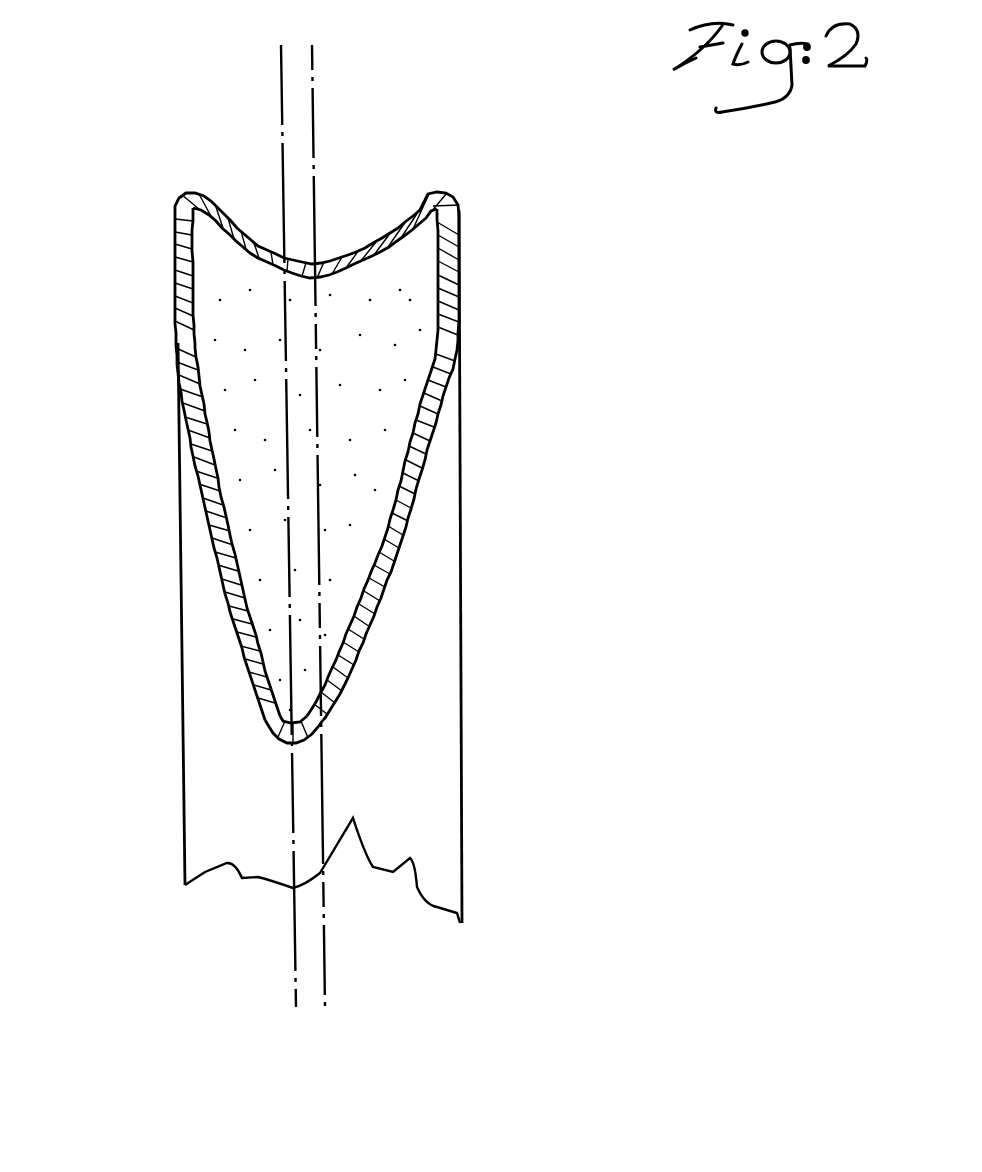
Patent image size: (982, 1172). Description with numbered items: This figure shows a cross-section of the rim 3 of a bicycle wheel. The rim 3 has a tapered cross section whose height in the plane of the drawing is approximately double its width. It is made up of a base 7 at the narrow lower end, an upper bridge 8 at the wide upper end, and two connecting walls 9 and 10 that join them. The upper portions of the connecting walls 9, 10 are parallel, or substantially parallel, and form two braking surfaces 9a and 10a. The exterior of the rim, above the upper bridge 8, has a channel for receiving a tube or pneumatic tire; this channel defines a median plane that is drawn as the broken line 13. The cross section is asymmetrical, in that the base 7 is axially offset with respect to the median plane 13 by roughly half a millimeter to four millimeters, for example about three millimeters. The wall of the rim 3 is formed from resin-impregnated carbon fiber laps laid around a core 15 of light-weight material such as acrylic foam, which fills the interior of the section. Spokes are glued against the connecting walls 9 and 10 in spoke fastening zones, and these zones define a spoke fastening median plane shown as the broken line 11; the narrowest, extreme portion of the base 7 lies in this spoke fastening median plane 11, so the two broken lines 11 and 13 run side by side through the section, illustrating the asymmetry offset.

The rim 3 is at (435, 658).
The base 7 is at (293, 745).
The upper bridge 8 is at (332, 256).
The connecting wall 9 is at (203, 530).
The braking surface 9a is at (177, 278).
The connecting wall 10 is at (418, 493).
The braking surface 10a is at (458, 272).
The spoke fastening median plane 11 is at (280, 107).
The median plane 13 is at (315, 102).
The core 15 is at (363, 428).